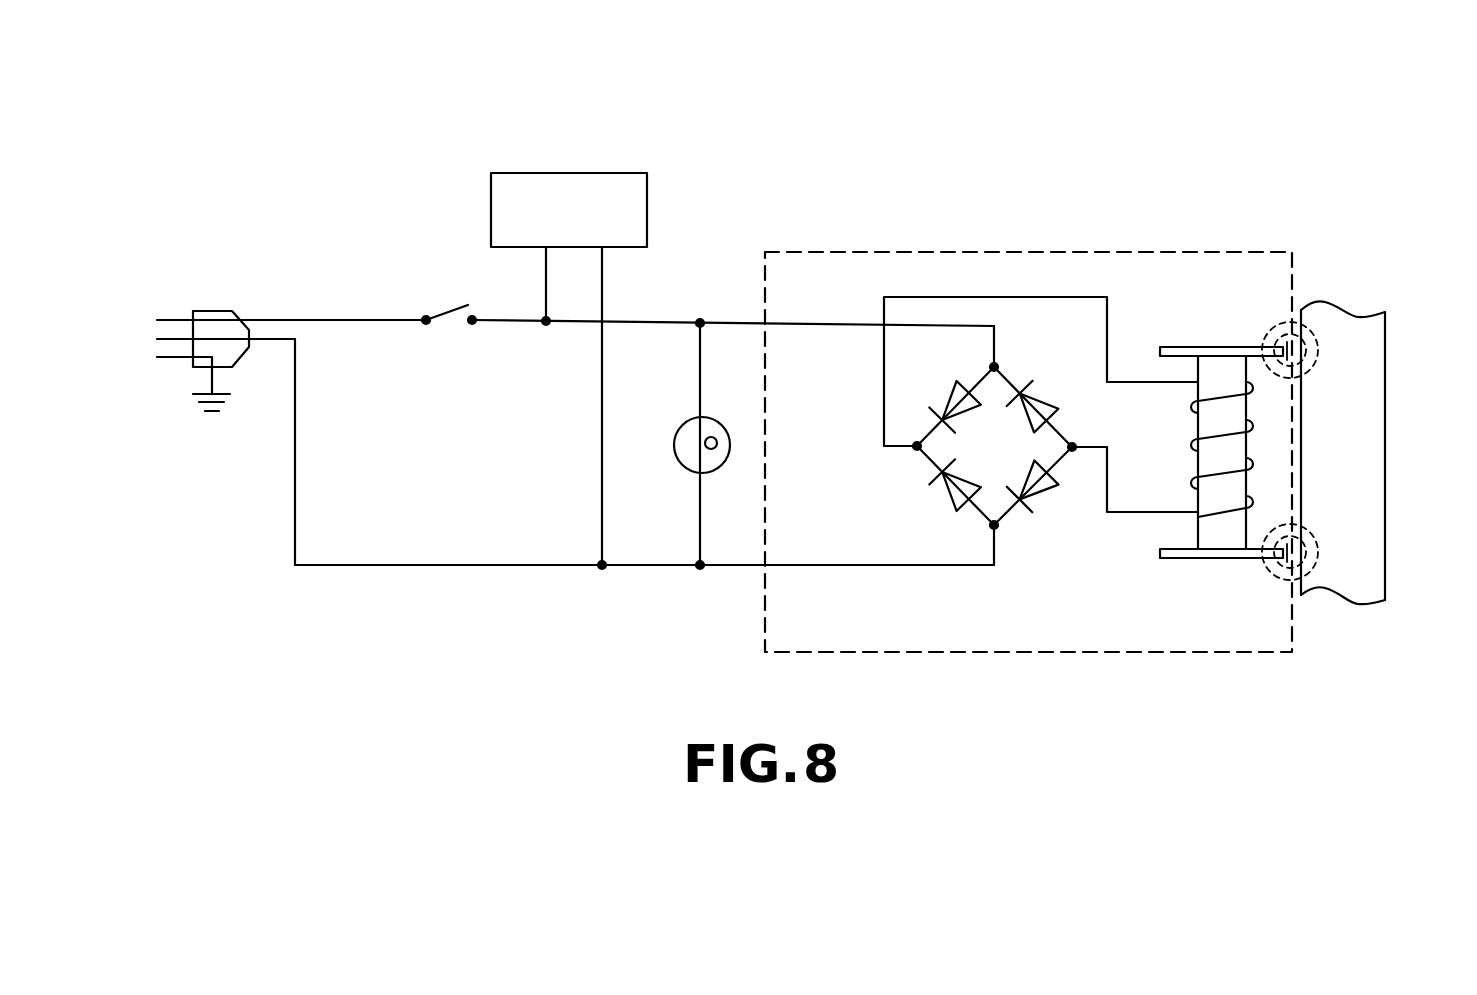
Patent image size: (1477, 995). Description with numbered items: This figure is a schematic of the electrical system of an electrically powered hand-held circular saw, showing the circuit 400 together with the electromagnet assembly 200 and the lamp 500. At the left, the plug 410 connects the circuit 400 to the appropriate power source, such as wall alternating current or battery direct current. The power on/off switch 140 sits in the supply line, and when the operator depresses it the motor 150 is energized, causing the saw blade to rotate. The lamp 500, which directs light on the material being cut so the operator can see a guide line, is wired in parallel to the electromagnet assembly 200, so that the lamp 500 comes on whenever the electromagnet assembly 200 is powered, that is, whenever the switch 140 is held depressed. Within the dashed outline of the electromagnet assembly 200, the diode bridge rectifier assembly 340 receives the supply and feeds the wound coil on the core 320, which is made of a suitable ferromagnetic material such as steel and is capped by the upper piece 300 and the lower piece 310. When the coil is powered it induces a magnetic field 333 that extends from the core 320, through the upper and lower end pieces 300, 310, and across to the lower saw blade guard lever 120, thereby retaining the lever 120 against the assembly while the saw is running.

The plug 410 is at (213, 311).
The power on/off switch 140 is at (467, 305).
The motor 150 is at (595, 173).
The lamp 500 is at (684, 426).
The circuit 400 is at (892, 124).
The electromagnet assembly 200 is at (1127, 250).
The diode bridge rectifier assembly 340 is at (896, 500).
The core 320 is at (1210, 527).
The upper piece 300 is at (1167, 347).
The lower piece 310 is at (1207, 558).
The magnetic field 333 is at (1277, 328).
The lower saw blade guard lever 120 is at (1385, 372).